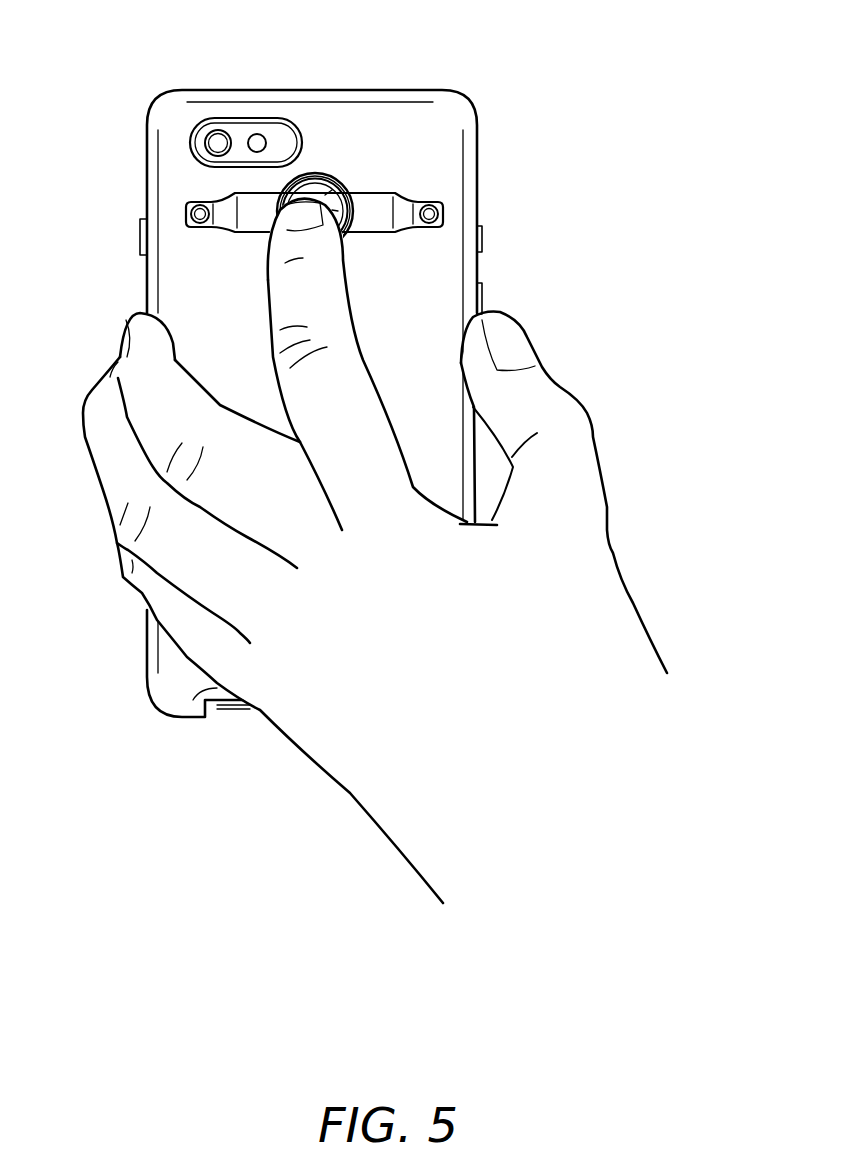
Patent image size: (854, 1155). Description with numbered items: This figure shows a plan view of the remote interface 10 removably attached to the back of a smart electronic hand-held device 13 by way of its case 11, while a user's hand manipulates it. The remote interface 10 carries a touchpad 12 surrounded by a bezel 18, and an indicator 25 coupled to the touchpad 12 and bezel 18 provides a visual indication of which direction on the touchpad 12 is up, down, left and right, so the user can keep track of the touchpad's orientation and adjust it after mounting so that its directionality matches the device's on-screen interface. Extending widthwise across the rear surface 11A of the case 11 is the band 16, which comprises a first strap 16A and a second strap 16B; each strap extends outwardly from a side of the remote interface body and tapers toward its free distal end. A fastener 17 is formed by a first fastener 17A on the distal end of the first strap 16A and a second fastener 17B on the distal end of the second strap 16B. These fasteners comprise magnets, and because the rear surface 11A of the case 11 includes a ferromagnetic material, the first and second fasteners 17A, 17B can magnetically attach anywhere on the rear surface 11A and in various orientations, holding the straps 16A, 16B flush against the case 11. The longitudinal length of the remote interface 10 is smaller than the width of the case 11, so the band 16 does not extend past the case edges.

The remote interface 10 is at (308, 372).
The case 11 is at (335, 378).
The rear surface 11A is at (412, 346).
The touchpad 12 is at (330, 201).
The smart electronic hand-held device 13 is at (282, 142).
The band 16 is at (308, 225).
The first strap 16A is at (248, 225).
The second strap 16B is at (380, 220).
The fastener 17 is at (308, 178).
The first fastener 17A is at (139, 191).
The second fastener 17B is at (483, 197).
The bezel 18 is at (337, 238).
The indicator 25 is at (315, 193).